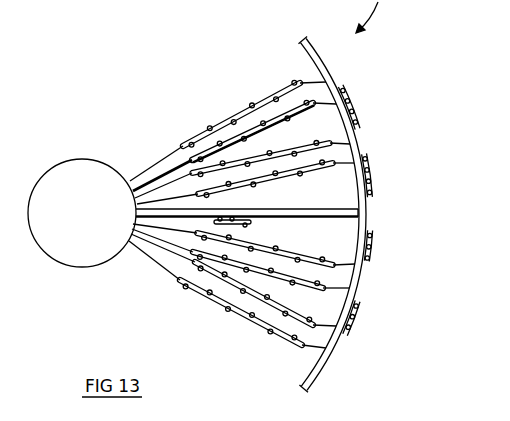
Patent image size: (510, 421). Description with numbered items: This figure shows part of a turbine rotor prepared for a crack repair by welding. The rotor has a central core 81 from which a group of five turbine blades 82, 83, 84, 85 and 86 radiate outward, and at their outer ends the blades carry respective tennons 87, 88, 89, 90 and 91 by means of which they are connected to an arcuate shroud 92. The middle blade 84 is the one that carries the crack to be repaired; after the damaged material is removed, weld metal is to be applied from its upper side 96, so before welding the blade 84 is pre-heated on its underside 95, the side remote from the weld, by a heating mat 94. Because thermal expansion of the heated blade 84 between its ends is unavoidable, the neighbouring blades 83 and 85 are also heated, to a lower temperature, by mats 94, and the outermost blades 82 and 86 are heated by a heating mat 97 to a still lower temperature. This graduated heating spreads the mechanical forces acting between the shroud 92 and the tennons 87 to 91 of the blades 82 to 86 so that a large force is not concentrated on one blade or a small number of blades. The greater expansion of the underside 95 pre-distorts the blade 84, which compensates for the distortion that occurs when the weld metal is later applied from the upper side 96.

The core 81 is at (88, 160).
The blade 82 is at (300, 78).
The blade 83 is at (343, 147).
The blade 84 is at (247, 217).
The blade 85 is at (343, 275).
The blade 86 is at (318, 334).
The tennon 87 is at (330, 82).
The tennon 88 is at (353, 146).
The tennon 89 is at (362, 216).
The tennon 90 is at (358, 283).
The tennon 91 is at (333, 347).
The shroud 92 is at (366, 173).
The heating mat 94 is at (252, 226).
The underside 95 is at (292, 218).
The upper side 96 is at (236, 209).
The heating mat 97 is at (258, 107).